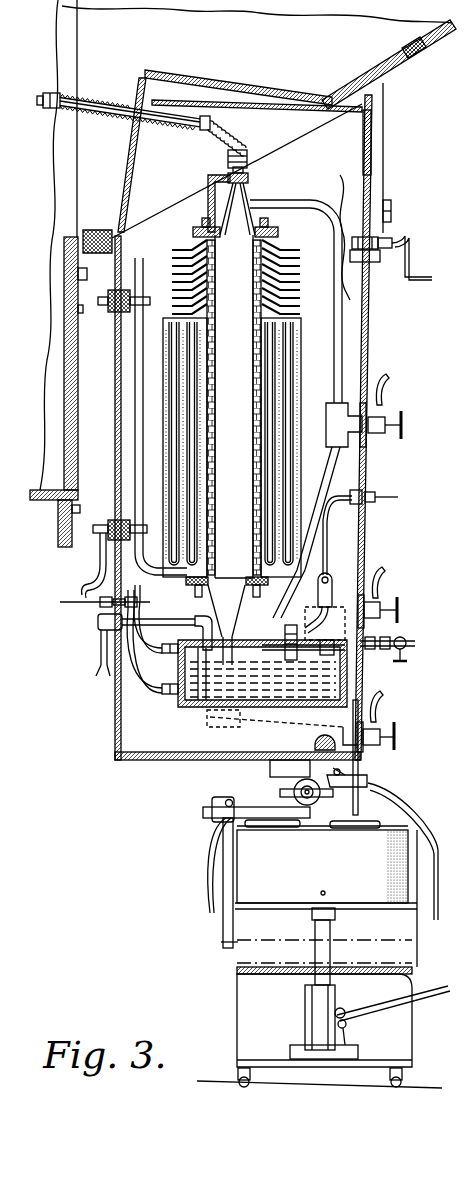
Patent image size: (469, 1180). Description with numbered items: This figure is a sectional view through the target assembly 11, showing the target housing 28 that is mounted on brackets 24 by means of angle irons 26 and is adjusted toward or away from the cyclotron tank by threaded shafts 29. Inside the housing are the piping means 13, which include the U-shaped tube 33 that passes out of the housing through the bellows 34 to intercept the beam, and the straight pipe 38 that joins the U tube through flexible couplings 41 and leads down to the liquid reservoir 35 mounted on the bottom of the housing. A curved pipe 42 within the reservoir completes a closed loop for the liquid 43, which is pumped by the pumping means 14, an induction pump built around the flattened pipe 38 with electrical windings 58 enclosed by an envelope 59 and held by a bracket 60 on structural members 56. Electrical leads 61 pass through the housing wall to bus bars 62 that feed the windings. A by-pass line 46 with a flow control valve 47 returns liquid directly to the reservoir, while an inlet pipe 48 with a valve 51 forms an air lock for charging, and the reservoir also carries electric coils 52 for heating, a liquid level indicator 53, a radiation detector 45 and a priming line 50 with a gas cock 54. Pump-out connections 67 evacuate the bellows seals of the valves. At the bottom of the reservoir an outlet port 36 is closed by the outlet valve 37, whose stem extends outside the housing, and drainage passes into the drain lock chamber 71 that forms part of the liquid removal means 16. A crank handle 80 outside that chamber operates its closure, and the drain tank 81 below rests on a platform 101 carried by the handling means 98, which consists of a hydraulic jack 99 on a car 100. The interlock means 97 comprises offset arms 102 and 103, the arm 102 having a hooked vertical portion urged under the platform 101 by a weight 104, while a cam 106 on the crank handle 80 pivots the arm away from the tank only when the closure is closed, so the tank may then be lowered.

The target assembly 11 is at (368, 528).
The piping means 13 is at (252, 188).
The pumping means 14 is at (300, 274).
The liquid removal means 16 is at (428, 786).
The brackets 24 is at (386, 104).
The angle irons 26 is at (380, 263).
The target housing 28 is at (370, 352).
The threaded shafts 29 is at (398, 240).
The U-shaped tube 33 is at (150, 106).
The bellows 34 is at (115, 93).
The liquid reservoir 35 is at (176, 700).
The outlet port 36 is at (356, 758).
The outlet valve 37 is at (385, 742).
The straight pipe 38 is at (234, 450).
The flexible couplings 41 is at (247, 143).
The curved pipe 42 is at (220, 728).
The liquid 43 is at (268, 688).
The radiation detector 45 is at (280, 638).
The by-pass line 46 is at (305, 192).
The flow control valve 47 is at (385, 438).
The inlet pipe 48 is at (327, 576).
The priming line 50 is at (336, 652).
The valve 51 is at (390, 606).
The electric coils 52 is at (197, 704).
The liquid level indicator 53 is at (190, 656).
The gas cock 54 is at (404, 640).
The structural members 56 is at (195, 229).
The electrical windings 58 is at (280, 236).
The envelope 59 is at (167, 318).
The bracket 60 is at (230, 172).
The electrical leads 61 is at (82, 574).
The bus bars 62 is at (135, 396).
The pump-out connection 67 is at (388, 386).
The drain lock chamber 71 is at (258, 769).
The crank handle 80 is at (262, 794).
The drain tank 81 is at (326, 864).
The interlock means 97 is at (212, 872).
The handling means 98 is at (232, 986).
The hydraulic jack 99 is at (305, 1011).
The car 100 is at (414, 1027).
The platform 101 is at (382, 908).
The offset arm 102 is at (222, 921).
The offset arm 103 is at (432, 934).
The weight 104 is at (212, 809).
The cam 106 is at (312, 778).